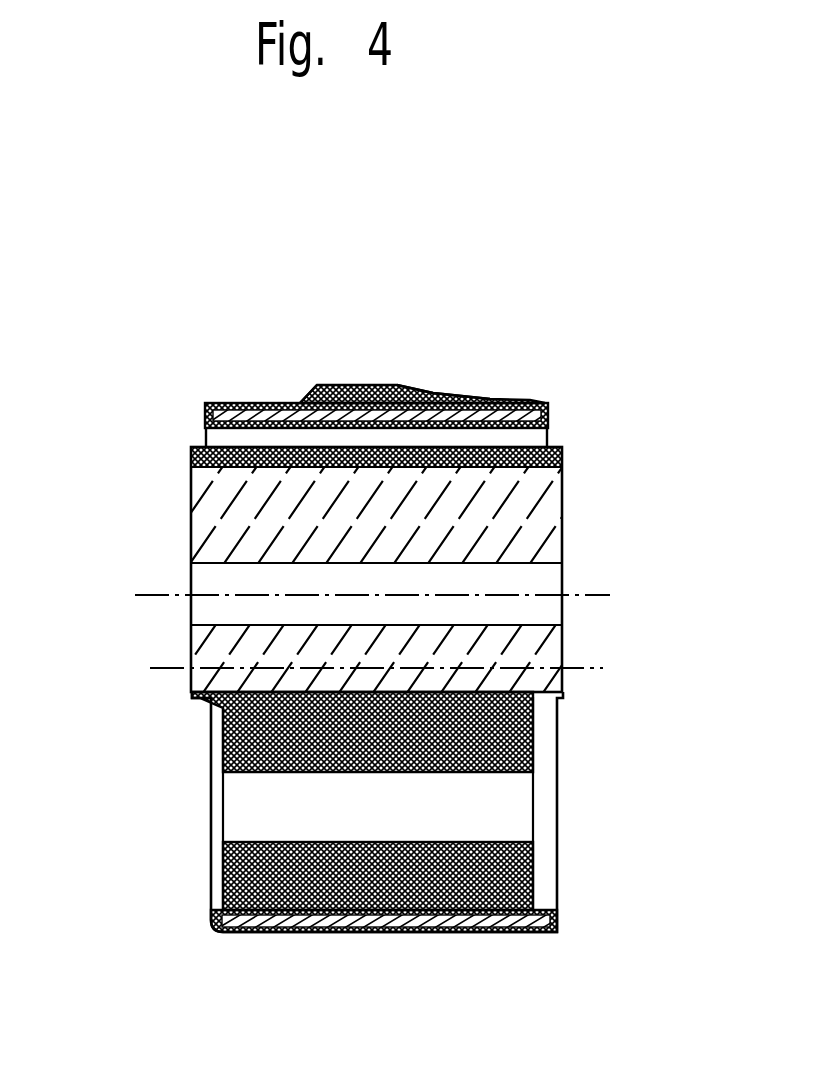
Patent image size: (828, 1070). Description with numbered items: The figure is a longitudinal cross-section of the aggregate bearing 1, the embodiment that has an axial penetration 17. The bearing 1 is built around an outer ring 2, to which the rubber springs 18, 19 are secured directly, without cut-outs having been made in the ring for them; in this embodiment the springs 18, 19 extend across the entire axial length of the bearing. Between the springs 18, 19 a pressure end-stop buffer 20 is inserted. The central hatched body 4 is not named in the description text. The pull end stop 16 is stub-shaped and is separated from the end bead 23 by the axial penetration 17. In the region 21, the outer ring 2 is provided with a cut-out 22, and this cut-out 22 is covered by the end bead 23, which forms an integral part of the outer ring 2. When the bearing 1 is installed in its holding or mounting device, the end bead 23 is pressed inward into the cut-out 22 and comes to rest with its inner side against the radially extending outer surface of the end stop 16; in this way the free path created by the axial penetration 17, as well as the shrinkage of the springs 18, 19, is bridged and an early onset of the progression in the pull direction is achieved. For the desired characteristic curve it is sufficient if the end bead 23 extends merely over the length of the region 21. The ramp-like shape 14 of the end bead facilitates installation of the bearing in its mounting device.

The aggregate bearing 1 is at (154, 817).
The outer ring 2 is at (453, 927).
The core / shaft body 4 is at (533, 533).
The ramp-like design of end bead 14 is at (417, 388).
The pull end stop 16 is at (213, 447).
The axial penetration 17 is at (505, 435).
The rubber spring 18 is at (456, 730).
The rubber spring 19 is at (533, 723).
The pressure end-stop buffer 20 is at (535, 887).
The region 21 is at (469, 360).
The cut-out 22 is at (302, 402).
The end bead 23 is at (360, 400).